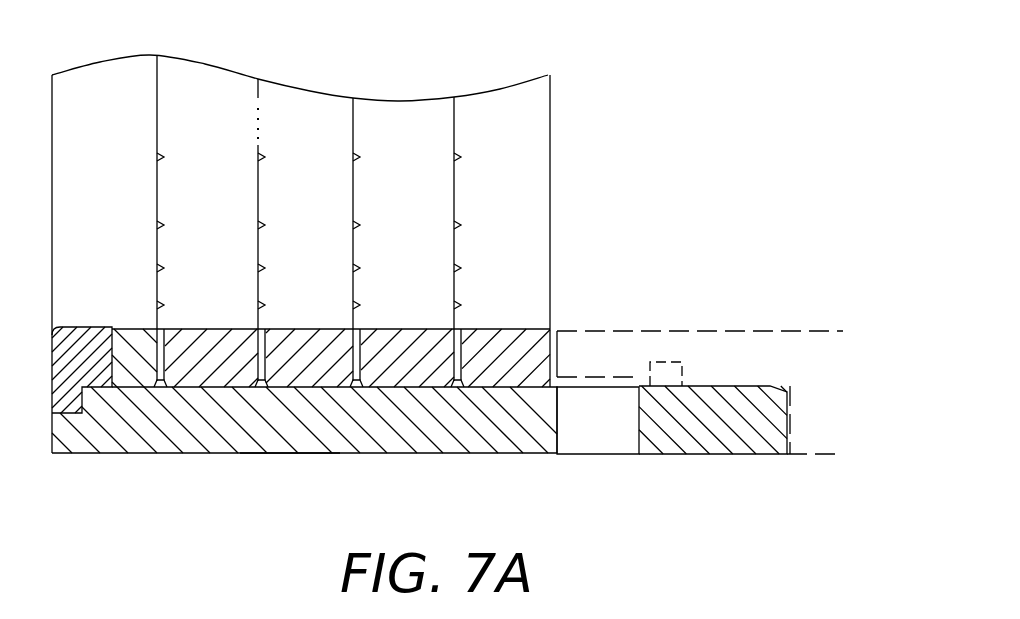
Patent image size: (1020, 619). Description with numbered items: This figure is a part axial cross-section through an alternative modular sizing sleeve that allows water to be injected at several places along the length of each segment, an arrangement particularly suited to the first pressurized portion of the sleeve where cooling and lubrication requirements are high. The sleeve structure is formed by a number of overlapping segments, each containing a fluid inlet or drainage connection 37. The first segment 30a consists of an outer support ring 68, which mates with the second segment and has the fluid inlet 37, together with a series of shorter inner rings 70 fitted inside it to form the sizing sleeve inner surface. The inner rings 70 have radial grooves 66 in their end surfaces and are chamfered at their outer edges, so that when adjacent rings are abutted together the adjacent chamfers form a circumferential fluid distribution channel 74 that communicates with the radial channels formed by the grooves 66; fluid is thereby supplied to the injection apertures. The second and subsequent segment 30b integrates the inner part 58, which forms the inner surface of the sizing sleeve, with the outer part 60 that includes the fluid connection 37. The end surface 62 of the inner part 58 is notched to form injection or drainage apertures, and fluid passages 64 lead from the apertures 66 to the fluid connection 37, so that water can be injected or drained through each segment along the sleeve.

The inner ring 70 is at (297, 113).
The radial groove 66 is at (158, 225).
The circumferential fluid distribution channel 74 is at (255, 386).
The outer support ring 68 is at (327, 440).
The first segment 30a is at (288, 455).
The second and subsequent segment 30b is at (748, 364).
The fluid inlet or drainage connection 37 is at (612, 433).
The outer part 60 is at (833, 433).
The end surface 62 is at (573, 340).
The inner part 58 is at (610, 330).
The fluid passage 64 is at (618, 377).